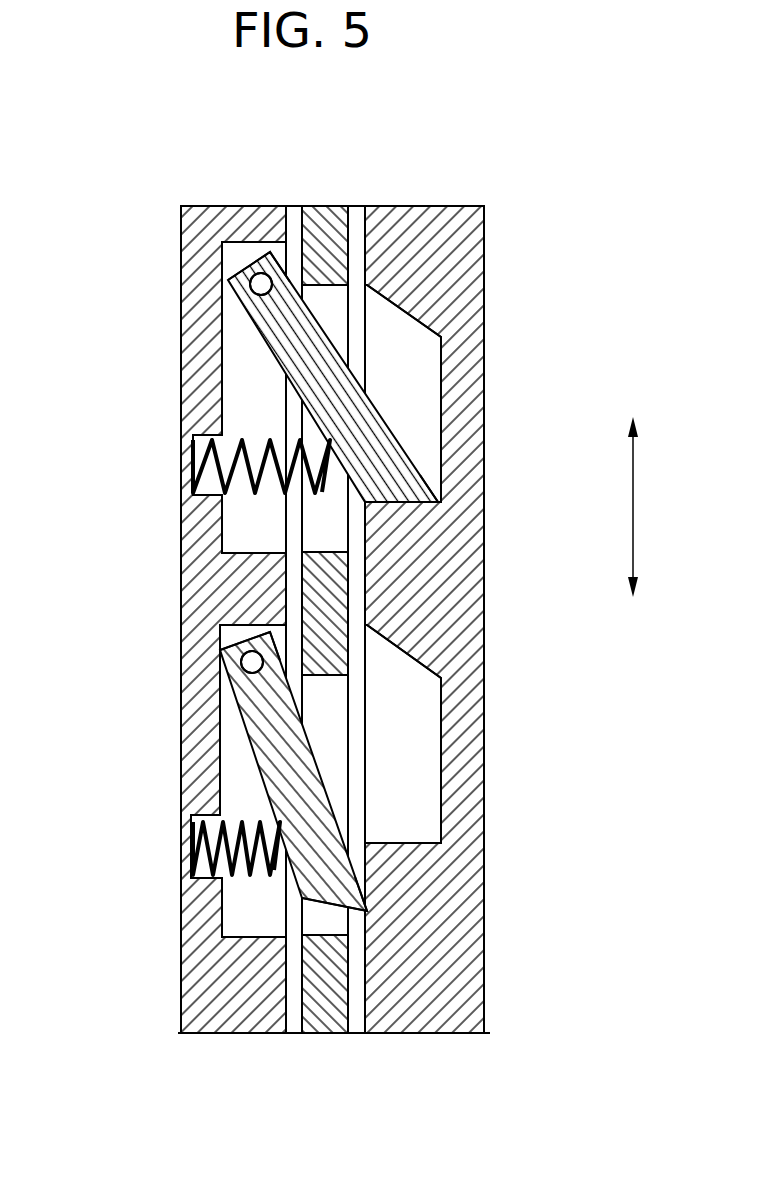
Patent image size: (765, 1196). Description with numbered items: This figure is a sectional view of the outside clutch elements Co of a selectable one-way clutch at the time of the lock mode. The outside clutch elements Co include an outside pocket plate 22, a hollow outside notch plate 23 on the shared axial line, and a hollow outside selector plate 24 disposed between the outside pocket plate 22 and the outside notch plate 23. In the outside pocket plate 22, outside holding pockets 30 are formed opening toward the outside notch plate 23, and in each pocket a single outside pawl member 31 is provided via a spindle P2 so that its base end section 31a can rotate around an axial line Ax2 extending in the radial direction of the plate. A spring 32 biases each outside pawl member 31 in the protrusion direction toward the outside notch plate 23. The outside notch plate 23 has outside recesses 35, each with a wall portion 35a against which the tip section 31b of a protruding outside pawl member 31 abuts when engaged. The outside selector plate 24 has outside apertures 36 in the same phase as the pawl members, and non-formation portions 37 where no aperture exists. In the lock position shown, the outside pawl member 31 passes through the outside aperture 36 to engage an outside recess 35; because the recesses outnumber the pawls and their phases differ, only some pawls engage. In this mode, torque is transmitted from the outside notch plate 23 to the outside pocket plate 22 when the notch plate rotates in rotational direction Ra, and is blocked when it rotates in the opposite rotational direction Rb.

The outside clutch elements Co is at (477, 126).
The outside pocket plate 22 is at (193, 338).
The outside notch plate 23 is at (478, 308).
The outside selector plate 24 is at (318, 210).
The outside holding pocket 30 is at (238, 392).
The outside pawl member 31 is at (337, 376).
The base end section 31a is at (282, 266).
The tip section 31b is at (405, 503).
The spring 32 is at (250, 477).
The outside recess 35 is at (417, 398).
The wall portion 35a is at (430, 497).
The outside aperture 36 is at (327, 313).
The non-formation portion 37 is at (325, 615).
The spindle P2 is at (260, 283).
The axial line Ax2 is at (261, 284).
The rotational direction Ra is at (634, 445).
The rotational direction Rb is at (635, 570).